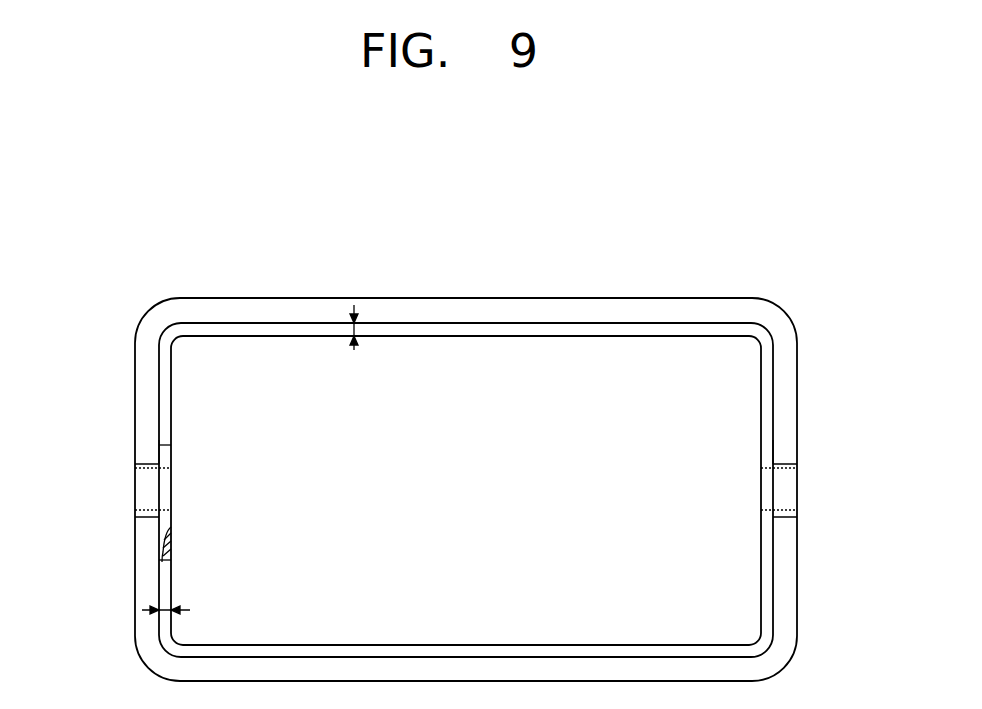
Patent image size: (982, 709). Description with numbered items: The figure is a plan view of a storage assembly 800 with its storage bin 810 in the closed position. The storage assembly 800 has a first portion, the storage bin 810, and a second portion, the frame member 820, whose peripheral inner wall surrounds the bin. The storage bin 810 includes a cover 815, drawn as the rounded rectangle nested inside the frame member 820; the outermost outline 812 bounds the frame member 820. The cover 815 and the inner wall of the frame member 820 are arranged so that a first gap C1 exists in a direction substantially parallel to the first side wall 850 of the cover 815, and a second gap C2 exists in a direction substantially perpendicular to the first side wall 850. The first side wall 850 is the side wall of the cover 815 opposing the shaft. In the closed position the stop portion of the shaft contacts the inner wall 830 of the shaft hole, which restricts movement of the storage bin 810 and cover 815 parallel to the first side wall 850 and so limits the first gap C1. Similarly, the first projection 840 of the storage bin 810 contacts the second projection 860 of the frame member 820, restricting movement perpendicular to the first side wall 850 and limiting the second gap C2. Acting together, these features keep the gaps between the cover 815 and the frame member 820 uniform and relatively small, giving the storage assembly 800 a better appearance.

The storage assembly 800 is at (735, 208).
The storage bin 810 is at (762, 383).
The outer surface of housing 812 is at (637, 299).
The cover 815 is at (733, 560).
The frame member 820 is at (165, 462).
The inner wall of the shaft hole 830 is at (148, 464).
The first projection 840 is at (170, 560).
The first side wall 850 is at (173, 446).
The second projection 860 is at (163, 548).
The first gap C1 is at (348, 330).
The second gap C2 is at (158, 612).